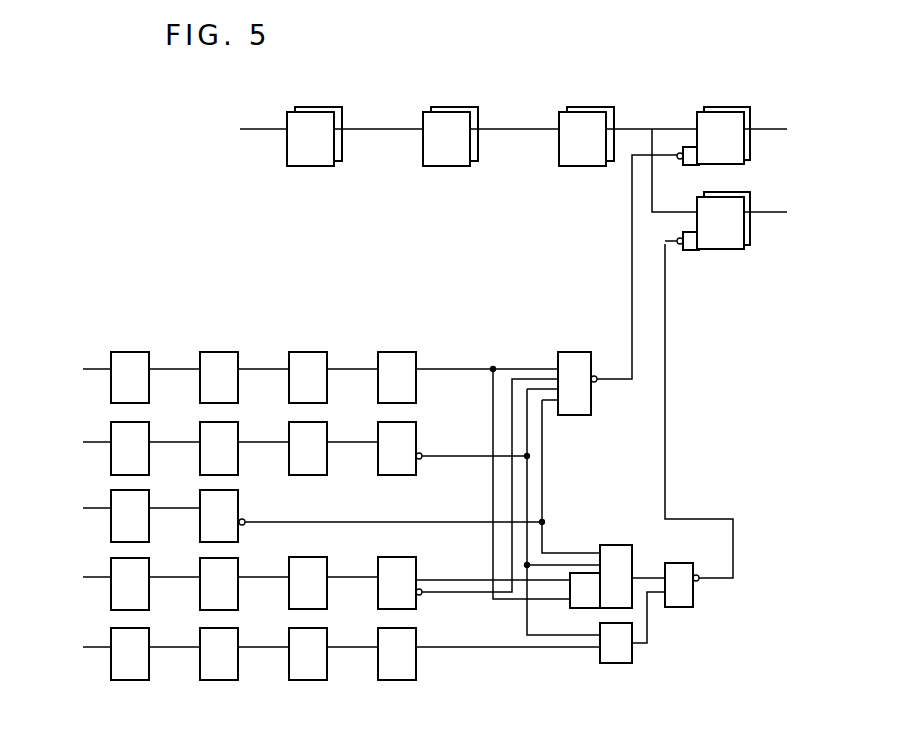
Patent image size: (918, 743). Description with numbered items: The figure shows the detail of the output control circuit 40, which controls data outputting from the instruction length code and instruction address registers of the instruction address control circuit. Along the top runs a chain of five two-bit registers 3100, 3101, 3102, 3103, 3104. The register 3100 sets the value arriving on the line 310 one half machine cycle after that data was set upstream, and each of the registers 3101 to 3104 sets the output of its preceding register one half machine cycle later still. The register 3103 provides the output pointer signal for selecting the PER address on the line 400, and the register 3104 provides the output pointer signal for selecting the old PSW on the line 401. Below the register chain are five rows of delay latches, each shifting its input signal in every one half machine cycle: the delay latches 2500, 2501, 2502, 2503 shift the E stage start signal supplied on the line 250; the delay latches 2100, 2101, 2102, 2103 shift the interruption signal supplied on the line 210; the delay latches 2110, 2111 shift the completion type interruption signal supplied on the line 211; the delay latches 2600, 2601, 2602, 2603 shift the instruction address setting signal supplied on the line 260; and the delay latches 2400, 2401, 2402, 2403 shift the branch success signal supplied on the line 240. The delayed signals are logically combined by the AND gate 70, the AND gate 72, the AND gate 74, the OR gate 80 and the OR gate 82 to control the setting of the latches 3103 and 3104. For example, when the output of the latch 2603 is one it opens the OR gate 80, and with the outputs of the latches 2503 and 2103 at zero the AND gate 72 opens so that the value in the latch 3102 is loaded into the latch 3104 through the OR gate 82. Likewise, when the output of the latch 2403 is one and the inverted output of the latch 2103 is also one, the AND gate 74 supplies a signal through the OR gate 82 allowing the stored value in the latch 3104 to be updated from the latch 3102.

The output control circuit 40 is at (291, 247).
The line 310 is at (239, 131).
The 2-bit register 3100 is at (313, 167).
The 2-bit register 3101 is at (450, 167).
The 2-bit register 3102 is at (585, 167).
The 2-bit register 3103 is at (735, 165).
The 2-bit register 3104 is at (735, 250).
The signal 400 is at (789, 132).
The signal 401 is at (789, 214).
The AND gate 70 is at (583, 352).
The AND gate 72 is at (623, 545).
The AND gate 74 is at (620, 664).
The OR gate 80 is at (585, 609).
The OR gate 82 is at (684, 563).
The line 250 is at (77, 371).
The delay latch 2500 is at (132, 352).
The delay latch 2501 is at (221, 352).
The delay latch 2502 is at (310, 352).
The delay latch 2503 is at (399, 352).
The line 210 is at (78, 444).
The delay latch 2100 is at (133, 421).
The delay latch 2101 is at (222, 421).
The delay latch 2102 is at (311, 421).
The delay latch 2103 is at (400, 421).
The line 211 is at (80, 510).
The delay latch 2110 is at (133, 489).
The delay latch 2111 is at (238, 496).
The line 260 is at (75, 579).
The delay latch 2600 is at (133, 557).
The delay latch 2601 is at (222, 557).
The delay latch 2602 is at (305, 556).
The delay latch 2603 is at (416, 562).
The line 240 is at (75, 649).
The delay latch 2400 is at (133, 627).
The delay latch 2401 is at (222, 627).
The delay latch 2402 is at (311, 627).
The delay latch 2403 is at (400, 627).